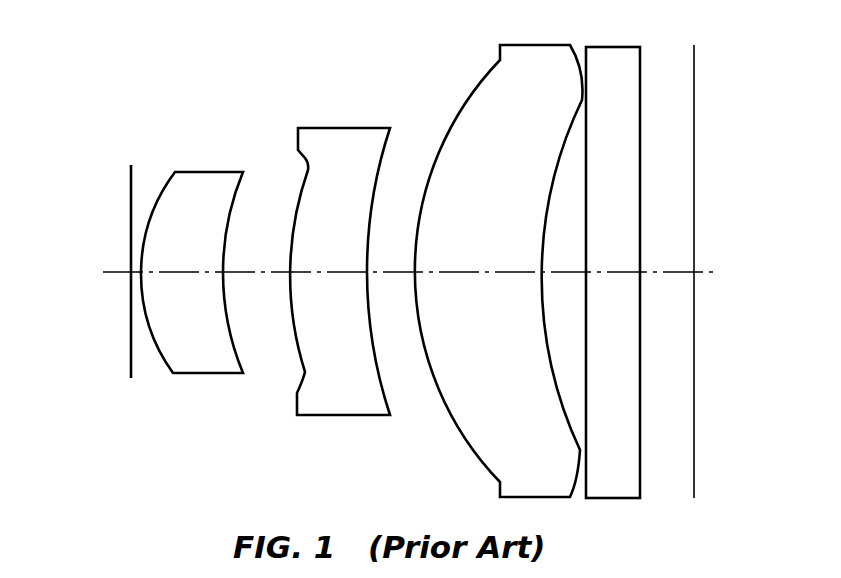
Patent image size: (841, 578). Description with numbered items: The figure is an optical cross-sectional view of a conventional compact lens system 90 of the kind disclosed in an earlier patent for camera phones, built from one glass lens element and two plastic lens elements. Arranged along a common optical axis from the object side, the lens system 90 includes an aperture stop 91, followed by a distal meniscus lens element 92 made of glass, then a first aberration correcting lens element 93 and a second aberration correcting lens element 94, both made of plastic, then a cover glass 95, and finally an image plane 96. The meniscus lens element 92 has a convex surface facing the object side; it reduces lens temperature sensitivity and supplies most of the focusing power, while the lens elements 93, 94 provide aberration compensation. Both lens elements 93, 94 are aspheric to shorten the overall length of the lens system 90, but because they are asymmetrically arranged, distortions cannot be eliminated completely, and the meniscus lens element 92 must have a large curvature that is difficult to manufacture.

The lens system 90 is at (261, 118).
The aperture stop 91 is at (130, 192).
The distal meniscus lens element 92 is at (195, 172).
The first aberration correcting lens element 93 is at (323, 128).
The second aberration correcting lens element 94 is at (533, 45).
The cover glass 95 is at (605, 58).
The image plane 96 is at (694, 70).